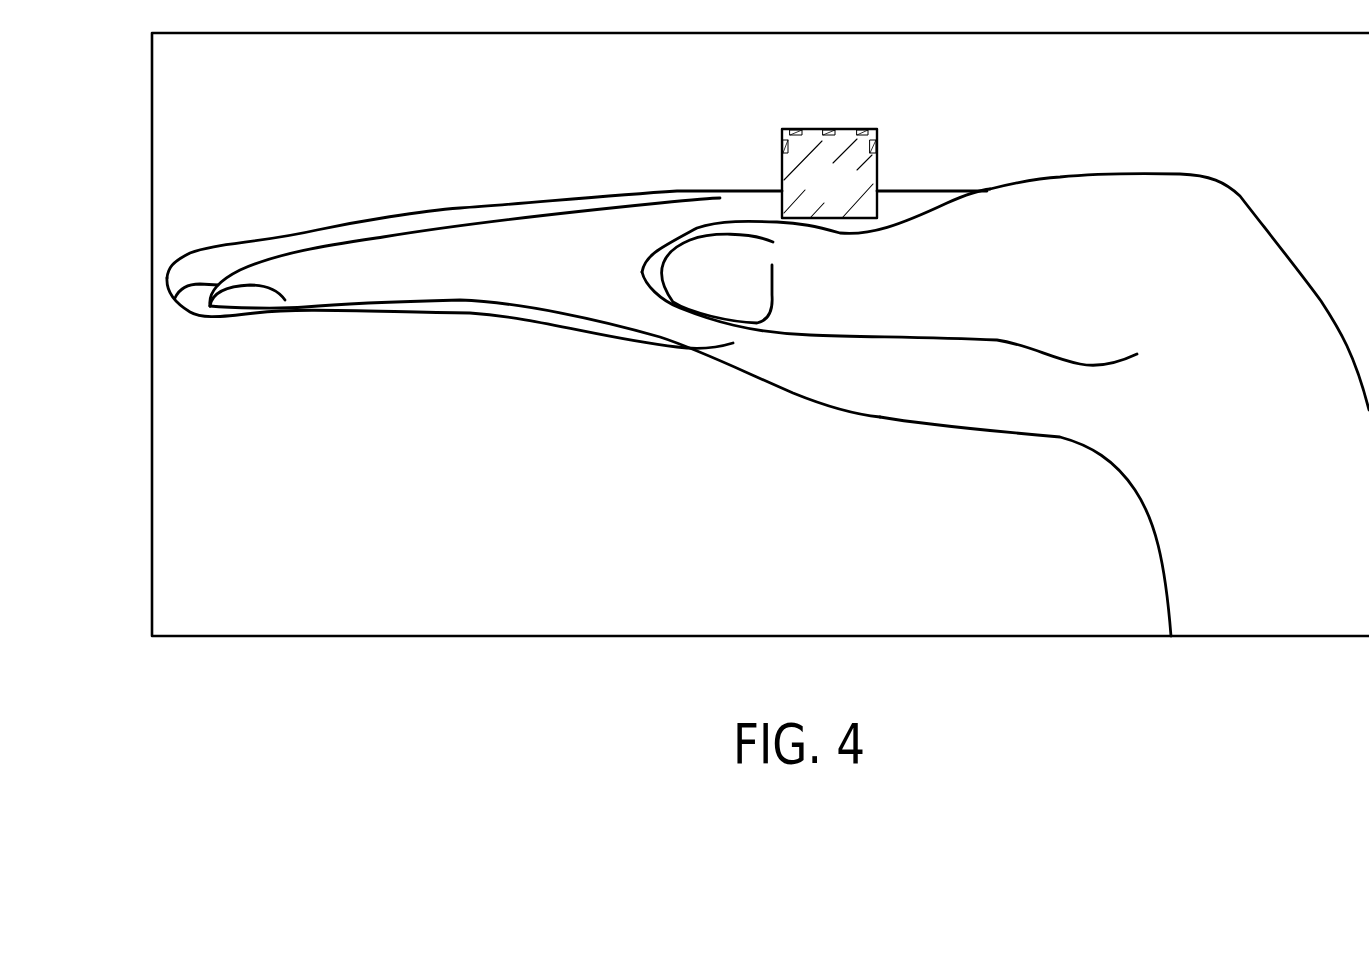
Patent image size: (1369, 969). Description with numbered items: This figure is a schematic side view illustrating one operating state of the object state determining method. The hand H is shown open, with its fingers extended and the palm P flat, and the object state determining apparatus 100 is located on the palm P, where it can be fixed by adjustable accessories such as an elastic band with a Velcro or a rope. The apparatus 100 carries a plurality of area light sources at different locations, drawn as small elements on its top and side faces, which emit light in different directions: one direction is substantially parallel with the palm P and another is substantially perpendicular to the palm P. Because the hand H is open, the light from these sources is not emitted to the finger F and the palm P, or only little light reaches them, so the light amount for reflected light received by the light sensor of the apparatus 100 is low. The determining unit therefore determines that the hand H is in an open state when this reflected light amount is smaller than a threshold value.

The object state determining apparatus 100 is at (850, 198).
The finger F is at (452, 208).
The hand H is at (601, 384).
The palm P is at (823, 407).